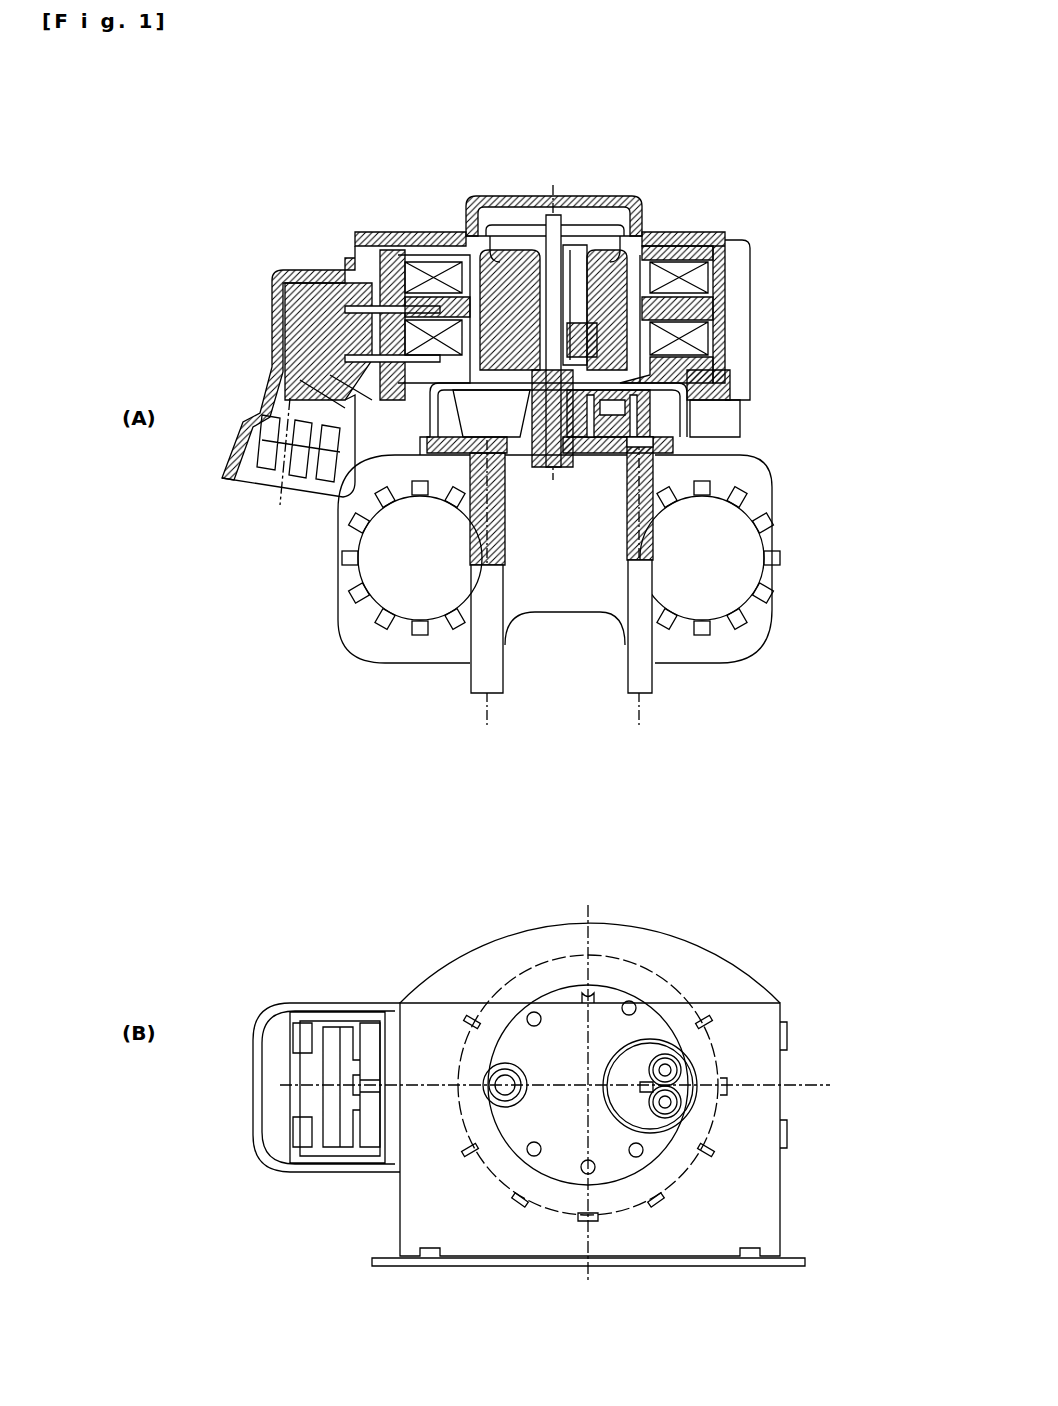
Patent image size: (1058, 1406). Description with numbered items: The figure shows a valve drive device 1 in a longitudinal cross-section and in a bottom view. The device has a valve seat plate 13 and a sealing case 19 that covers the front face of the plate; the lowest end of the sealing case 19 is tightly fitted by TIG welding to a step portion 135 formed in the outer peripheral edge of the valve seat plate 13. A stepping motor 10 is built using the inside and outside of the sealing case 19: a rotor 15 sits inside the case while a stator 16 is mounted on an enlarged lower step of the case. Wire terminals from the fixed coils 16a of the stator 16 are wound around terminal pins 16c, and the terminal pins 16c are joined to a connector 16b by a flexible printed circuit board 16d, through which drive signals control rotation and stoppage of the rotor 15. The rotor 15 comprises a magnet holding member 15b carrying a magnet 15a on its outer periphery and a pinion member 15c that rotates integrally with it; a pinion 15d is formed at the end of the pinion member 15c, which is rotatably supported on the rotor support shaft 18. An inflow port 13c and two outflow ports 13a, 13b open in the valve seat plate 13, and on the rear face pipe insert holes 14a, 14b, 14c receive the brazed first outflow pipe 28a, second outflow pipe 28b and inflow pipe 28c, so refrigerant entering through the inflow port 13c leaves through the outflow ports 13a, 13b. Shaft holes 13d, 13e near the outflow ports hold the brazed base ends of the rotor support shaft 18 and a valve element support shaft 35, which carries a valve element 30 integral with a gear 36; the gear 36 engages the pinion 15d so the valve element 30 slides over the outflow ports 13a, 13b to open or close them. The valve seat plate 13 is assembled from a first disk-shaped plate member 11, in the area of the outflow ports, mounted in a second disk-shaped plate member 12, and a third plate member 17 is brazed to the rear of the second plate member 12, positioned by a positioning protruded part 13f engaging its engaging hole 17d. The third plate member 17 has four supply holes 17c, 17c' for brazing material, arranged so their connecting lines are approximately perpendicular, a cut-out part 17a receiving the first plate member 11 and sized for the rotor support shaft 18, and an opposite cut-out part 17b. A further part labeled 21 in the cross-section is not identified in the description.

The valve drive device 1 is at (289, 170).
The stepping motor 10 is at (770, 140).
The first disk-shaped plate member 11 is at (520, 580).
The second disk-shaped plate member 12 is at (482, 600).
The valve seat plate 13 is at (366, 724).
The first outflow port 13a is at (757, 505).
The second outflow port 13b is at (688, 1106).
The inflow port 13c is at (425, 246).
The shaft hole 13d is at (547, 452).
The shaft hole 13e is at (588, 440).
The positioning protruded part 13f is at (588, 1175).
The pipe insert hole 14a is at (752, 562).
The pipe insert hole 14b is at (682, 1100).
The pipe insert hole 14c is at (357, 533).
The rotor 15 is at (640, 240).
The magnet 15a is at (528, 258).
The magnet holding member 15b is at (531, 330).
The pinion member 15c is at (360, 592).
The pinion 15d is at (498, 440).
The stator 16 is at (700, 240).
The fixed coils 16a is at (745, 337).
The connector 16b is at (286, 487).
The terminal pins 16c is at (330, 508).
The flexible printed circuit board 16d is at (305, 270).
The third plate member 17 is at (518, 440).
The cut-out part 17a is at (620, 1048).
The cut-out part 17b is at (470, 1000).
The supply holes 17c is at (576, 1081).
The supply holes 17c' is at (591, 1093).
The engaging hole 17d is at (612, 1279).
The rotor support shaft 18 is at (576, 250).
The sealing case 19 is at (645, 226).
The sleeve 21 is at (597, 256).
The first outflow pipe 28a is at (636, 697).
The second outflow pipe 28b is at (824, 1153).
The inflow pipe 28c is at (500, 456).
The valve element 30 is at (712, 458).
The valve element support shaft 35 is at (690, 395).
The gear 36 is at (700, 432).
The step portion 135 is at (742, 486).